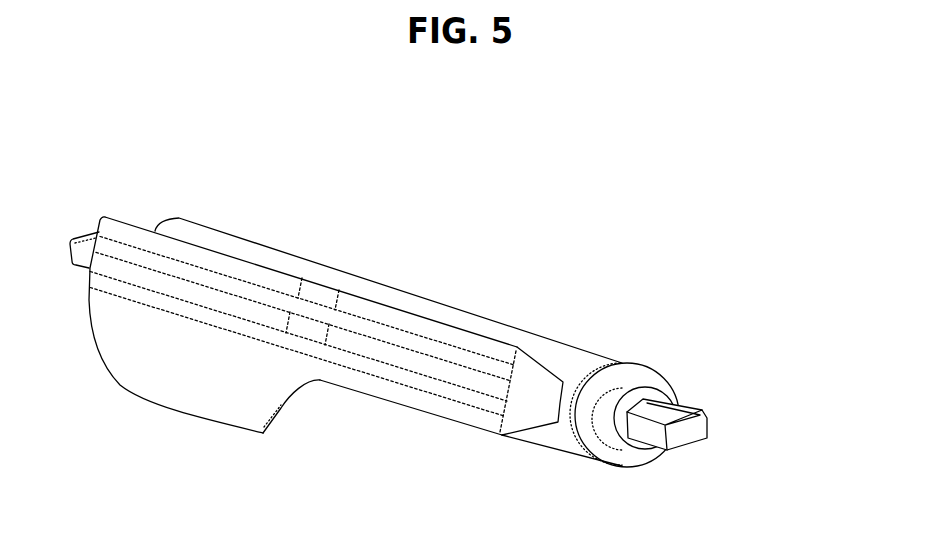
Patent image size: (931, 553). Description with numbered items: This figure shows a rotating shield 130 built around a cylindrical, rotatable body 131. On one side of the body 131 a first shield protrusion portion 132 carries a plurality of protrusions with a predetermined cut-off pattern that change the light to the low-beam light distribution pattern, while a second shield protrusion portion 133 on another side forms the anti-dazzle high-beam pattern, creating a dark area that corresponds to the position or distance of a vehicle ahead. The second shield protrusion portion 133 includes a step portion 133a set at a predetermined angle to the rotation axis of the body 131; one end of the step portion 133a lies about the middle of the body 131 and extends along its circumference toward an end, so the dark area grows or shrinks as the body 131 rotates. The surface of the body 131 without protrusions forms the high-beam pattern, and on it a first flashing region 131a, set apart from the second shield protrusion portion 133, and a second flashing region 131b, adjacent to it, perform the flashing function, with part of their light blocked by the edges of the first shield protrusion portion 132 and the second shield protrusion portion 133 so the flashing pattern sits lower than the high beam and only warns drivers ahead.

The rotating shield 130 is at (414, 241).
The body 131 is at (621, 283).
The first flashing region 131a is at (553, 342).
The second flashing region 131b is at (562, 450).
The first shield protrusion portion 132 is at (530, 410).
The second shield protrusion portion 133 is at (200, 400).
The step portion 133a is at (277, 423).